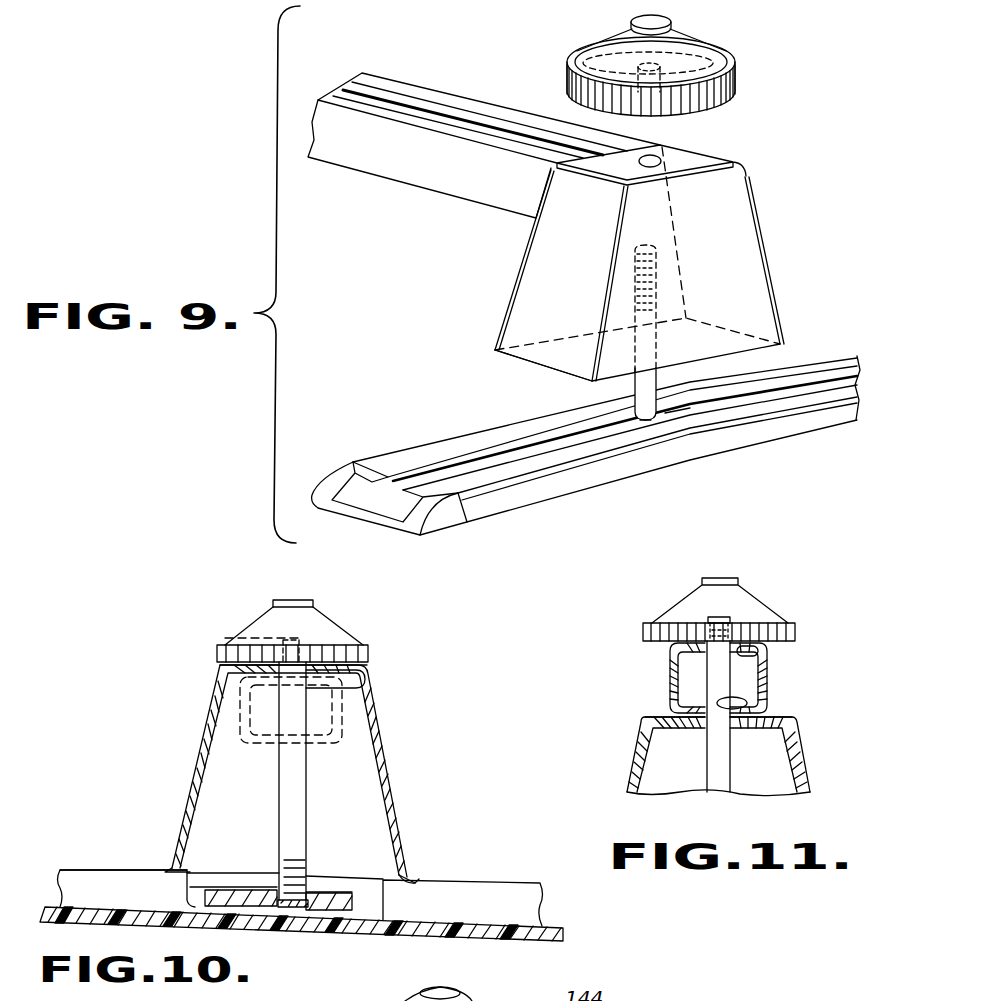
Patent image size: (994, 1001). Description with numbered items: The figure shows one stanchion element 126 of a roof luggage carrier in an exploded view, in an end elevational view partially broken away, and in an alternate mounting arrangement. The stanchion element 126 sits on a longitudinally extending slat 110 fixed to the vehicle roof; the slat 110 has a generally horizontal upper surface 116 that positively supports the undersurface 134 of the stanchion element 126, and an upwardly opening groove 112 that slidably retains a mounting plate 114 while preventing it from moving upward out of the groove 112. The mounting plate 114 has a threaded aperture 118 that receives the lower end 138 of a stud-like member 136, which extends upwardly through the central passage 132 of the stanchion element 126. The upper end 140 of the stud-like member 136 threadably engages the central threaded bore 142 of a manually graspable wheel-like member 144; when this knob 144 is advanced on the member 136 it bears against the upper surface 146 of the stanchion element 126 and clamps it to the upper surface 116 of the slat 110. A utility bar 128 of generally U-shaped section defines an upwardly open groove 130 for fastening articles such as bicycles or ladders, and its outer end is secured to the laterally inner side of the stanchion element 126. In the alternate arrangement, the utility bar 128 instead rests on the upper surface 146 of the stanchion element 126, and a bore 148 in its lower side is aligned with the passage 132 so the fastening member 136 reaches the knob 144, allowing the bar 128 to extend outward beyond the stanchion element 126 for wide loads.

In FIG. 9, the slat 110 is at (497, 515).
In FIG. 10, the slat 110 is at (508, 878).
In FIG. 9, the groove 112 is at (528, 452).
In FIG. 10, the groove 112 is at (202, 886).
In FIG. 9, the mounting plate 114 is at (672, 416).
In FIG. 10, the mounting plate 114 is at (224, 907).
In FIG. 9, the upper surface 116 is at (840, 386).
In FIG. 10, the upper surface 116 is at (146, 868).
In FIG. 9, the threaded aperture 118 is at (652, 424).
In FIG. 10, the threaded aperture 118 is at (310, 927).
In FIG. 9, the stanchion element 126 is at (755, 242).
In FIG. 10, the stanchion element 126 is at (393, 786).
In FIG. 11, the stanchion element 126 is at (807, 759).
In FIG. 9, the utility bar 128 is at (453, 197).
In FIG. 10, the utility bar 128 is at (241, 725).
In FIG. 11, the utility bar 128 is at (670, 680).
In FIG. 9, the groove 130 is at (454, 116).
In FIG. 11, the groove 130 is at (758, 652).
In FIG. 10, the central passage 132 is at (366, 682).
In FIG. 11, the central passage 132 is at (713, 730).
In FIG. 9, the undersurface 134 is at (528, 358).
In FIG. 10, the undersurface 134 is at (412, 878).
In FIG. 9, the stud-like member 136 is at (633, 395).
In FIG. 10, the stud-like member 136 is at (279, 812).
In FIG. 10, the lower end 138 is at (288, 909).
In FIG. 9, the upper end 140 is at (660, 277).
In FIG. 10, the upper end 140 is at (370, 652).
In FIG. 11, the upper end 140 is at (720, 613).
In FIG. 9, the central threaded bore 142 is at (750, 53).
In FIG. 10, the central threaded bore 142 is at (222, 638).
In FIG. 9, the wheel-like member 144 is at (742, 87).
In FIG. 10, the wheel-like member 144 is at (352, 631).
In FIG. 11, the wheel-like member 144 is at (719, 609).
In FIG. 9, the upper surface 146 is at (703, 162).
In FIG. 10, the upper surface 146 is at (220, 665).
In FIG. 11, the upper surface 146 is at (665, 713).
In FIG. 11, the bore 148 is at (747, 702).